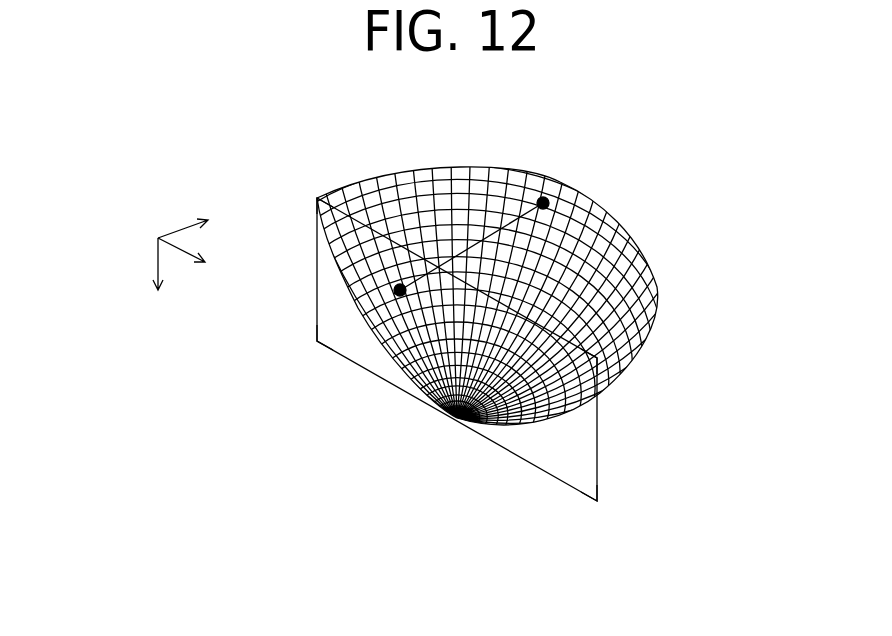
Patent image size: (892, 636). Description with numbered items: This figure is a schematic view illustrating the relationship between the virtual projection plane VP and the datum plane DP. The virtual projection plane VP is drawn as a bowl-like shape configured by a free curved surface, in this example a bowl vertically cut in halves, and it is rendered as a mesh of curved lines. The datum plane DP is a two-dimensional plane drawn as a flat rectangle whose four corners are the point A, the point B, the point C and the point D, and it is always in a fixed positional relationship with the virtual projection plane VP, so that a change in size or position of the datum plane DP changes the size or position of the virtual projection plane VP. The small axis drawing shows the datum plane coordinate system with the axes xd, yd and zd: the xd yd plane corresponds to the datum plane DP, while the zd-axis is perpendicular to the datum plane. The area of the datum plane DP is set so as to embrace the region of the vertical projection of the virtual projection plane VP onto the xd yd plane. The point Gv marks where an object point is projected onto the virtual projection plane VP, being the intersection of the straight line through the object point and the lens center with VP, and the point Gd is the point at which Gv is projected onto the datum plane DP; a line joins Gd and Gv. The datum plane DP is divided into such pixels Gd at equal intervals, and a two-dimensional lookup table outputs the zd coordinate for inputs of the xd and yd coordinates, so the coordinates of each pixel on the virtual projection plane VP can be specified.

The virtual projection plane VP is at (455, 185).
The datum plane DP is at (500, 447).
The point A is at (309, 195).
The point B is at (309, 343).
The point C is at (593, 513).
The point D is at (608, 377).
The point Gv is at (543, 198).
The point Gd is at (384, 358).
The zd-axis zd is at (201, 214).
The xd-axis xd is at (200, 263).
The yd-axis yd is at (156, 278).